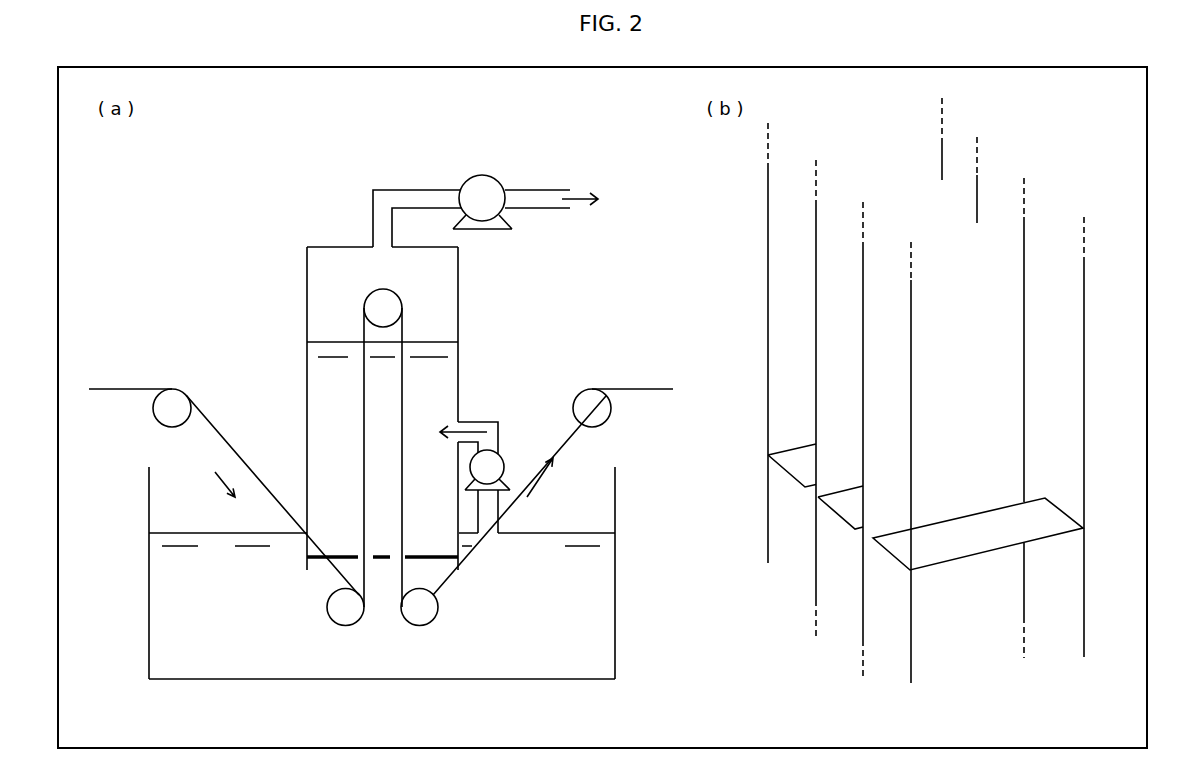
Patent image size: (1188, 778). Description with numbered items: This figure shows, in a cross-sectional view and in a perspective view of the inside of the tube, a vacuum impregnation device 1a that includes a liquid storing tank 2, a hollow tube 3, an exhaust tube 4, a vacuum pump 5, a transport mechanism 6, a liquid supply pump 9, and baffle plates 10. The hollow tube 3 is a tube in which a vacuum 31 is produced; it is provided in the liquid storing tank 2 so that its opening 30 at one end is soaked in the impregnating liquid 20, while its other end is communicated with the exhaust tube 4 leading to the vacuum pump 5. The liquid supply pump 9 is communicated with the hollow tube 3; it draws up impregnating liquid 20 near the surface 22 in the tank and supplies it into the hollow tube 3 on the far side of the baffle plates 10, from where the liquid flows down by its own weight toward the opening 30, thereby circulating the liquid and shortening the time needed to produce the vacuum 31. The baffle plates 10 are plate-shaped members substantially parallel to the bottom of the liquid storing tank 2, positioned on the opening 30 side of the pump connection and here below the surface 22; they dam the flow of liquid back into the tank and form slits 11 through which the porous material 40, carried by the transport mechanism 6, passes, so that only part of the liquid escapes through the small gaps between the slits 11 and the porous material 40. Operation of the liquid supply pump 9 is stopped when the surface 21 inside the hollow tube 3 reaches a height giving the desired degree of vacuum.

The vacuum impregnation device 1a is at (630, 167).
The liquid storing tank 2 is at (616, 595).
The hollow tube 3 is at (459, 298).
The exhaust tube 4 is at (424, 189).
The vacuum pump 5 is at (484, 176).
The transport mechanism 6 is at (173, 398).
The liquid supply pump 9 is at (510, 427).
The baffle plates 10 is at (338, 553).
The slits 11 is at (352, 564).
The impregnating liquid 20 is at (592, 681).
The surface of the impregnating liquid in the hollow tube 21 is at (431, 343).
The surface of the impregnating liquid in the liquid storing tank 22 is at (175, 531).
The opening 30 is at (447, 573).
The vacuum 31 is at (337, 256).
The porous material 40 is at (102, 388).